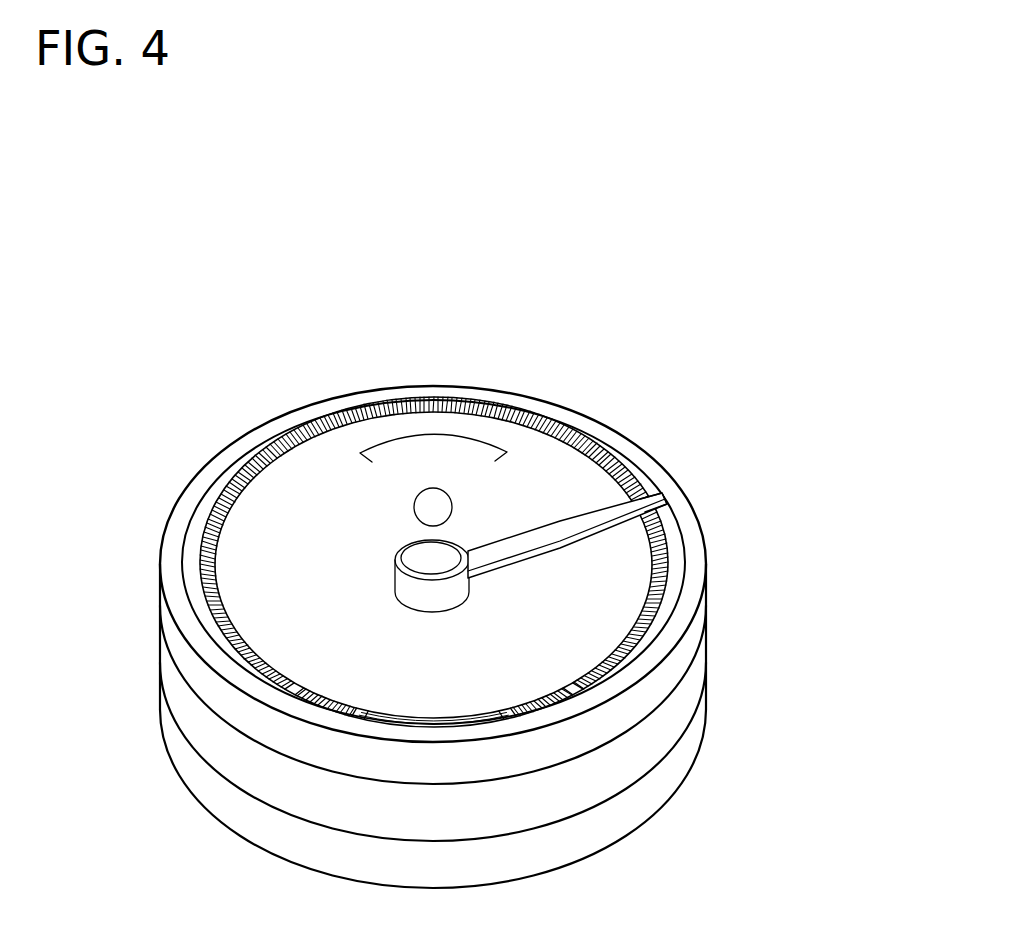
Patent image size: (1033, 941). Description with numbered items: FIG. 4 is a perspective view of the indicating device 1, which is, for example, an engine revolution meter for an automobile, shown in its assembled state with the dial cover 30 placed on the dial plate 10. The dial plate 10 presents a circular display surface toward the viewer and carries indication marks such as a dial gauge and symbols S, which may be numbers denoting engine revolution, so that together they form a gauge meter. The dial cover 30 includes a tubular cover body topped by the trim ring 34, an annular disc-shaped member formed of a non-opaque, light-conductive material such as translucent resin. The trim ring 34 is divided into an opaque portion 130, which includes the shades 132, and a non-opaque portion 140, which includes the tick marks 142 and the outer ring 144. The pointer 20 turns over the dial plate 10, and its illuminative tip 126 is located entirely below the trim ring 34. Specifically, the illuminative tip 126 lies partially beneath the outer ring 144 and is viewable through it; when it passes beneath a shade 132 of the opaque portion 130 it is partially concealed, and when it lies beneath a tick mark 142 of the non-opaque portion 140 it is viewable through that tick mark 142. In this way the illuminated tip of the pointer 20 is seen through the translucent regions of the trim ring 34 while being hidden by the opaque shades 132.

The indicating device 1 is at (770, 304).
The dial plate 10 is at (234, 535).
The pointer 20 is at (495, 497).
The dial cover 30 is at (434, 632).
The trim ring 34 is at (645, 487).
The illuminative tip 126 is at (658, 494).
The opaque portion 130 is at (640, 533).
The shade 132 is at (668, 494).
The non-opaque portion 140 is at (544, 562).
The tick mark 142 is at (678, 567).
The outer ring 144 is at (620, 453).
The symbols S is at (308, 682).